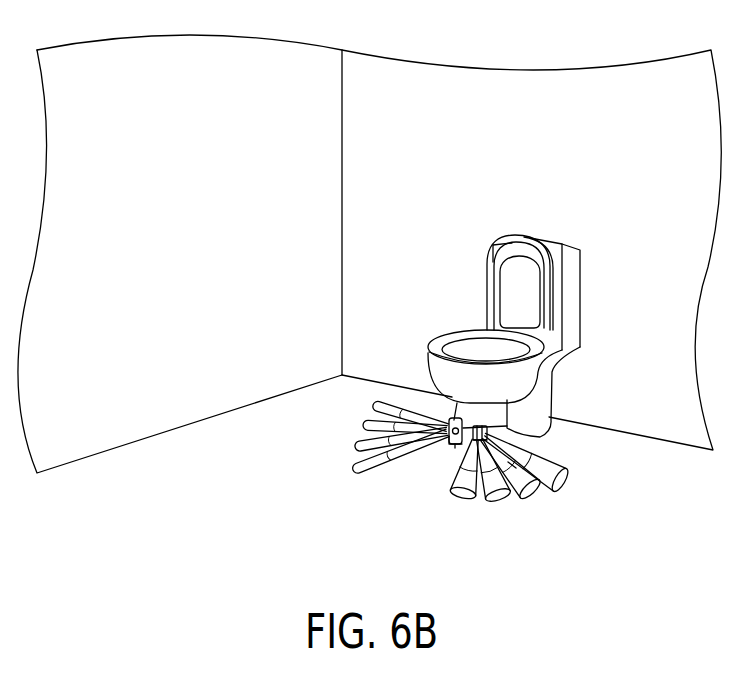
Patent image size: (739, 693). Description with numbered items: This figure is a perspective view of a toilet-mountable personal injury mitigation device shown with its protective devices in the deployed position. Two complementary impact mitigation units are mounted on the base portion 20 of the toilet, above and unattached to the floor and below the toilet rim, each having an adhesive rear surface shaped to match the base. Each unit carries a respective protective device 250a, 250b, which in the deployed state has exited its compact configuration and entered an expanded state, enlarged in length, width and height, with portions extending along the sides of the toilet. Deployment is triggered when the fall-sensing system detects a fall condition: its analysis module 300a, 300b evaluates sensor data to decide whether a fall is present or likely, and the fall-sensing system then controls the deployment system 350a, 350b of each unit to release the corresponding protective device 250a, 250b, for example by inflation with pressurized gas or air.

The base portion 20 is at (452, 414).
The protective device 250a is at (368, 410).
The protective device 250b is at (547, 470).
The analysis module 300a is at (452, 444).
The analysis module 300b is at (483, 442).
The deployment system 350a is at (447, 440).
The deployment system 350b is at (513, 466).